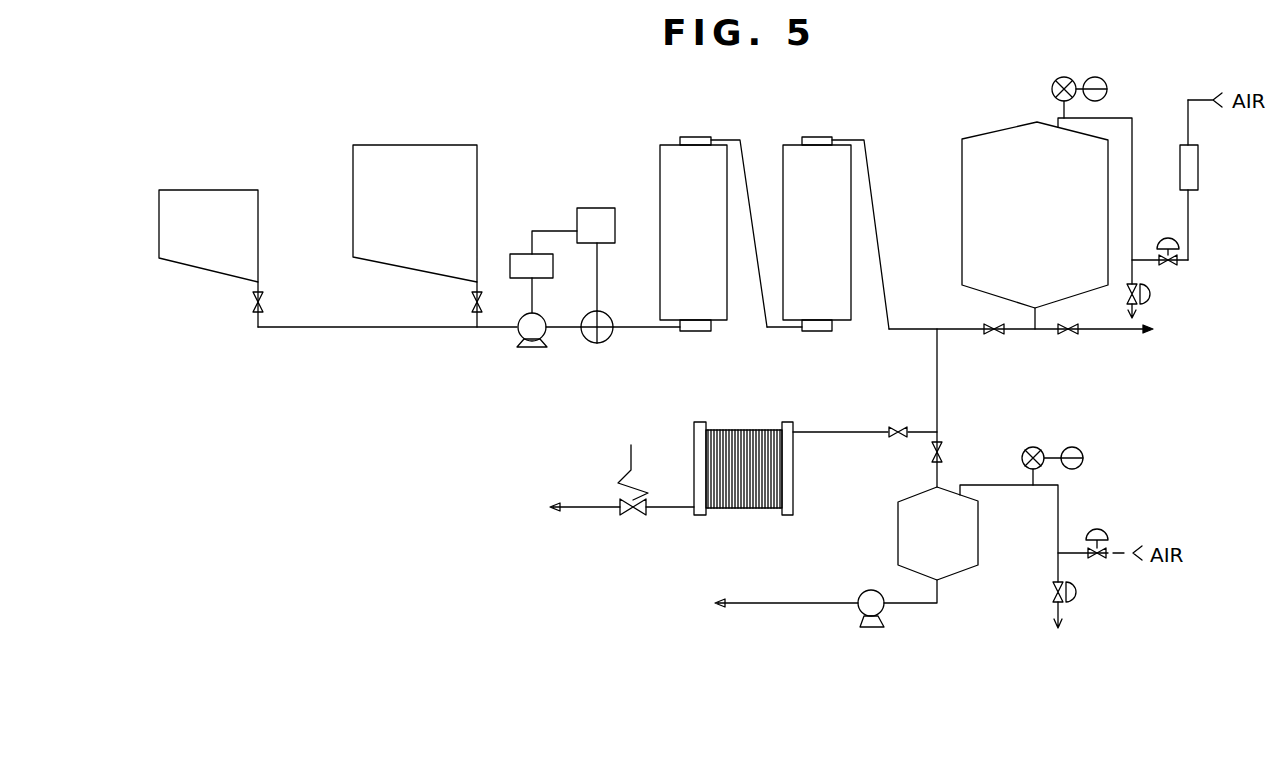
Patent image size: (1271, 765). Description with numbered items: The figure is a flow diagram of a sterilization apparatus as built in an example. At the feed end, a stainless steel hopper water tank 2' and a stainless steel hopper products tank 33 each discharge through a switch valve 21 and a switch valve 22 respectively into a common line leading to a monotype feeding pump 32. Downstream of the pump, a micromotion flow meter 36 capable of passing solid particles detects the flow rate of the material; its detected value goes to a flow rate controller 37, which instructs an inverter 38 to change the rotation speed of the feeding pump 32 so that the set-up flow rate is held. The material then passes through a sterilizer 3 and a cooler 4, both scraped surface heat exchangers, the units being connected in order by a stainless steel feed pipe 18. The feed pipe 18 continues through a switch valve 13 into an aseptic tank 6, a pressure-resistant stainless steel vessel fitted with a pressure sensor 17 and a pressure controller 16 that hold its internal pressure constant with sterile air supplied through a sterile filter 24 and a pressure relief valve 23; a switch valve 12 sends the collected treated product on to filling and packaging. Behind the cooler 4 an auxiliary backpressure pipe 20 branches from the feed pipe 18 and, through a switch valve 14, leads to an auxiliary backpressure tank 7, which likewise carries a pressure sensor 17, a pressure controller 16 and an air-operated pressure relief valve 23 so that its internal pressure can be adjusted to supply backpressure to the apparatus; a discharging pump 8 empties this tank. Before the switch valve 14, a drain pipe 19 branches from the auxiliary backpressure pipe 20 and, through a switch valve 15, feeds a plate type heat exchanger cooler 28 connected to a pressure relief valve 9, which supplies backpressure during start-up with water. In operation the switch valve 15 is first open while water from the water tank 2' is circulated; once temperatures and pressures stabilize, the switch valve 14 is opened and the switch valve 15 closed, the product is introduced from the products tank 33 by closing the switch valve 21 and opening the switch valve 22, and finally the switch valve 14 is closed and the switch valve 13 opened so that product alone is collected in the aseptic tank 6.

The water tank 2' is at (208, 208).
The products tank 33 is at (404, 145).
The switch valve 21 is at (250, 300).
The switch valve 22 is at (470, 300).
The feeding pump 32 is at (536, 348).
The inverter 38 is at (526, 254).
The flow rate controller 37 is at (592, 208).
The flow meter 36 is at (610, 338).
The sterilizer 3 is at (672, 137).
The cooler 4 is at (793, 137).
The feed pipe 18 is at (904, 322).
The aseptic tank 6 is at (962, 152).
The pressure sensor 17 is at (1052, 89).
The pressure controller 16 is at (1107, 89).
The sterile filter 24 is at (1198, 172).
The pressure relief valve 23 is at (1168, 266).
The switch valve 13 is at (998, 335).
The switch valve 12 is at (1070, 335).
The auxiliary backpressure pipe 20 is at (946, 407).
The switch valve 14 is at (944, 453).
The cooler 28 is at (733, 430).
The drain pipe 19 is at (850, 420).
The switch valve 15 is at (896, 426).
The pressure relief valve 9 is at (626, 512).
The auxiliary backpressure tank 7 is at (898, 518).
The discharging pump 8 is at (862, 628).